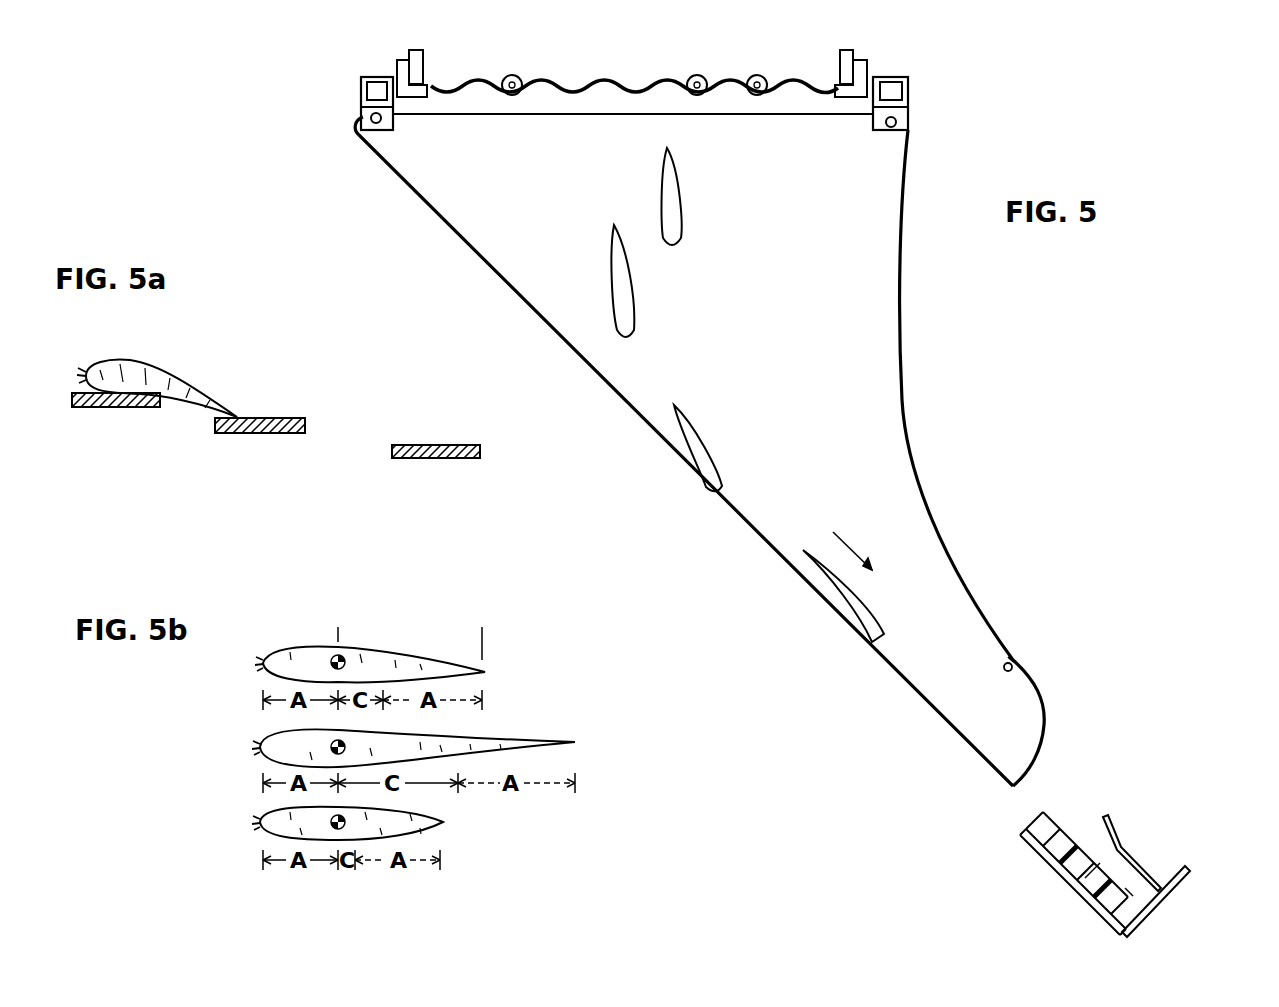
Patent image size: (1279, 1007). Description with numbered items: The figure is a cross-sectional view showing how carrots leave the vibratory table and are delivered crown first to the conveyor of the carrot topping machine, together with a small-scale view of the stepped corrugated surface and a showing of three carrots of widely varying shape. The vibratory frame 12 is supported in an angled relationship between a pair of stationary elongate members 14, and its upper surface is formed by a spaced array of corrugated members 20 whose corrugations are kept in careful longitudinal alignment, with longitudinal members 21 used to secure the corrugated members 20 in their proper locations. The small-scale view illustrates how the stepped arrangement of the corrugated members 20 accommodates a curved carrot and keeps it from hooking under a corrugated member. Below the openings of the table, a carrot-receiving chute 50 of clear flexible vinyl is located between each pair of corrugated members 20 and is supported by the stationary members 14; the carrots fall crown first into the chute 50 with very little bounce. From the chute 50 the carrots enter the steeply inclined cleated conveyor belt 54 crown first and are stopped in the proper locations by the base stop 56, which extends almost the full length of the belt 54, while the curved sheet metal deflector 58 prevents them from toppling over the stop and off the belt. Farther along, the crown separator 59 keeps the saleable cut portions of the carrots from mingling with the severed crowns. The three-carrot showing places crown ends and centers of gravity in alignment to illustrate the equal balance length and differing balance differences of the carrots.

In FIG. 5, the vibratory frame 12 is at (634, 50).
In FIG. 5, the stationary elongate members 14 is at (380, 83).
In FIG. 5, the corrugated members 20 is at (607, 78).
In FIG. 5a, the corrugated members 20 is at (112, 408).
In FIG. 5, the longitudinal members 21 is at (418, 64).
In FIG. 5, the chute 50 is at (900, 382).
In FIG. 5, the cleated conveyor belt 54 is at (1078, 886).
In FIG. 5, the base stop 56 is at (1162, 905).
In FIG. 5, the deflector 58 is at (1128, 863).
In FIG. 5, the crown separator 59 is at (1133, 893).